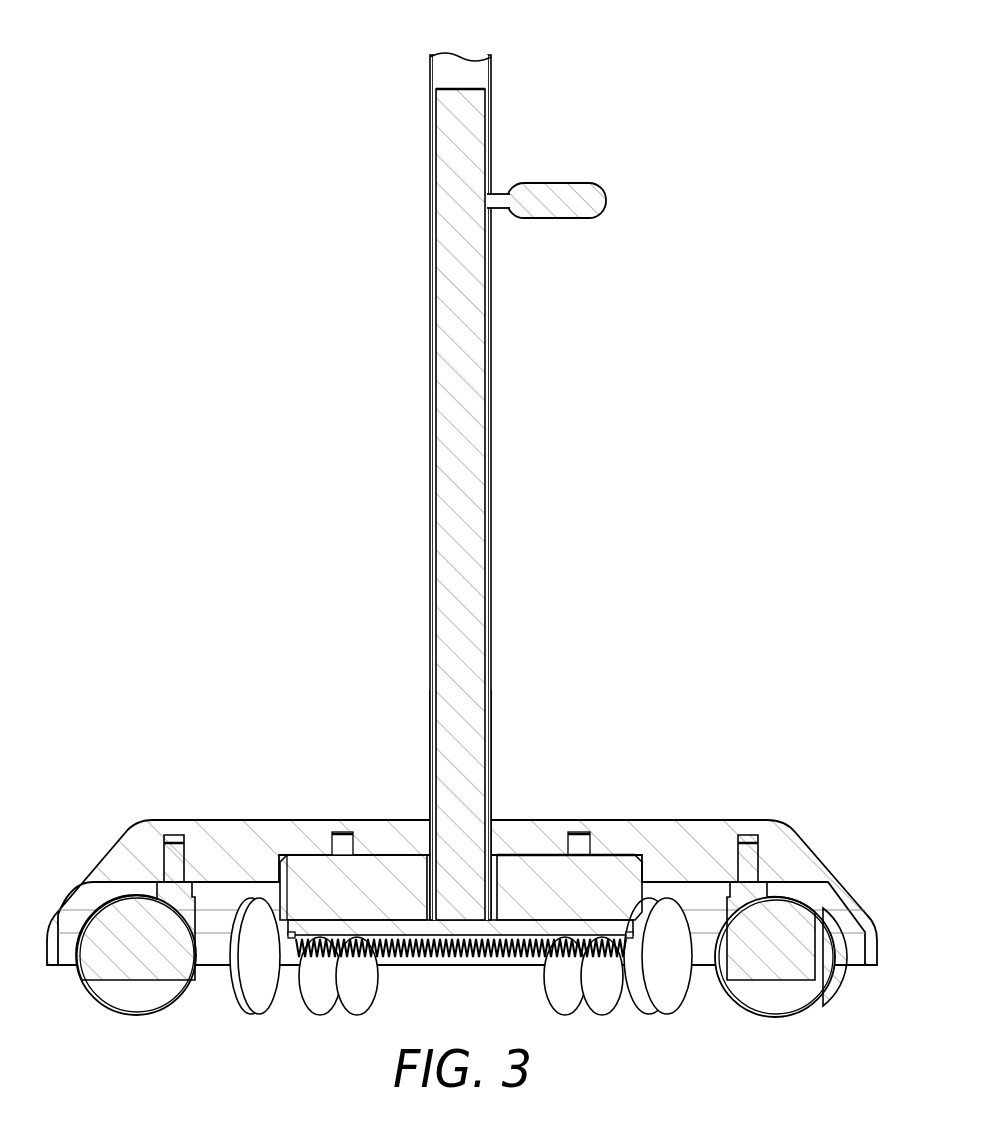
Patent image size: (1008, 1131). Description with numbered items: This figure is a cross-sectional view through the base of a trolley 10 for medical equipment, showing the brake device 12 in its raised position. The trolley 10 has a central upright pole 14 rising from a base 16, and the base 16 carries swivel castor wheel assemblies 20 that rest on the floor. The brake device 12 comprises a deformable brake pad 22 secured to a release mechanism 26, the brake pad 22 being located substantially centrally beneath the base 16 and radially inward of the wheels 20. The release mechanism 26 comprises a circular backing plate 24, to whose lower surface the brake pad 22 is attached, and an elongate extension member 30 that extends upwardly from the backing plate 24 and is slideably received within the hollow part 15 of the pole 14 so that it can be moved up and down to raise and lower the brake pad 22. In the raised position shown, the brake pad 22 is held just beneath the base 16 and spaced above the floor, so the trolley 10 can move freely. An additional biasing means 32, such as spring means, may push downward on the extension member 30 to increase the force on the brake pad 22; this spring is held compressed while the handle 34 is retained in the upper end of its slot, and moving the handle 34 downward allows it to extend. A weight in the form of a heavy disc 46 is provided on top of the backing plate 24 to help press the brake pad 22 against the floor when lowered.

The trolley 10 is at (294, 186).
The brake device 12 is at (478, 467).
The central upright pole 14 is at (430, 332).
The hollow part 15 is at (435, 83).
The base 16 is at (148, 798).
The swivel castor wheel assembly 20 is at (138, 968).
The brake pad 22 is at (460, 958).
The backing plate 24 is at (390, 928).
The release mechanism 26 is at (461, 854).
The extension member 30 is at (445, 713).
The additional biasing means 32 is at (532, 855).
The handle 34 is at (606, 200).
The heavy disc 46 is at (609, 874).